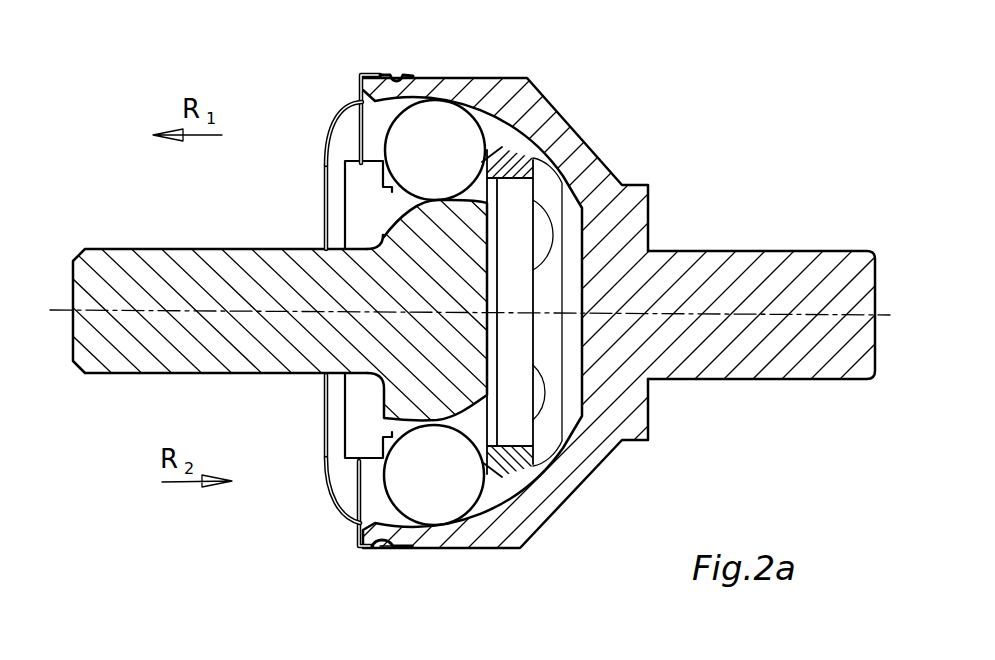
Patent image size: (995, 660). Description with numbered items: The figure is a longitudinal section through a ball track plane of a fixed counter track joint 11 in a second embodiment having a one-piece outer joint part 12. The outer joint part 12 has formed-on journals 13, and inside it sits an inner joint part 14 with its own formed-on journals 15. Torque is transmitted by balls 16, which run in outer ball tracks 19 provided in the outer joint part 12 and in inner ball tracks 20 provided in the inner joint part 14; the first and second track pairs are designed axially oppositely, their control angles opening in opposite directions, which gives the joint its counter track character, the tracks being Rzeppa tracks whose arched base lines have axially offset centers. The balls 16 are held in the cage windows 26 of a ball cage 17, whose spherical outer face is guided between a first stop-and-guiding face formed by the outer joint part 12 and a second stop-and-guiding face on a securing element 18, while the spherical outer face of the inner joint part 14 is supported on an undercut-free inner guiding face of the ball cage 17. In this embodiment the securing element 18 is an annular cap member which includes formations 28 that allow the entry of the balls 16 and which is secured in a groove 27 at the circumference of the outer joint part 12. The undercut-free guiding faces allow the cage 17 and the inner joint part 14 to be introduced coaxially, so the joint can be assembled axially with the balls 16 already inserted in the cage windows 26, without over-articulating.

The counter track joint 11 is at (666, 108).
The outer joint part 12 is at (460, 77).
The journals 13 is at (777, 260).
The inner joint part 14 is at (393, 237).
The journals 15 is at (178, 262).
The balls 16 is at (287, 512).
The ball cage 17 is at (380, 477).
The securing element 18 is at (362, 73).
The outer ball tracks 19 is at (307, 552).
The inner ball tracks 20 is at (390, 437).
The cage windows 26 is at (513, 127).
The groove 27 is at (395, 75).
The formations 28 is at (334, 486).